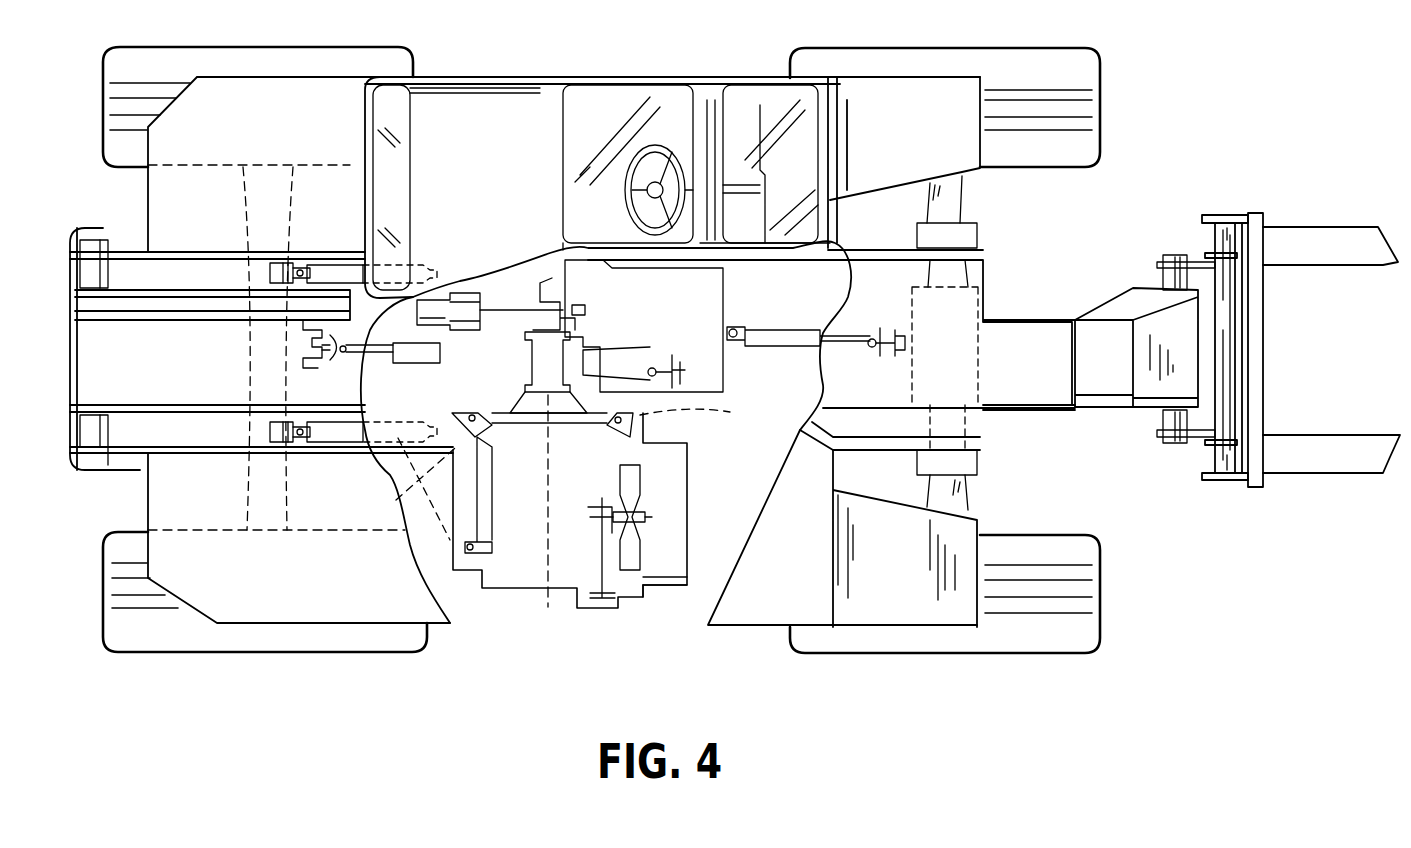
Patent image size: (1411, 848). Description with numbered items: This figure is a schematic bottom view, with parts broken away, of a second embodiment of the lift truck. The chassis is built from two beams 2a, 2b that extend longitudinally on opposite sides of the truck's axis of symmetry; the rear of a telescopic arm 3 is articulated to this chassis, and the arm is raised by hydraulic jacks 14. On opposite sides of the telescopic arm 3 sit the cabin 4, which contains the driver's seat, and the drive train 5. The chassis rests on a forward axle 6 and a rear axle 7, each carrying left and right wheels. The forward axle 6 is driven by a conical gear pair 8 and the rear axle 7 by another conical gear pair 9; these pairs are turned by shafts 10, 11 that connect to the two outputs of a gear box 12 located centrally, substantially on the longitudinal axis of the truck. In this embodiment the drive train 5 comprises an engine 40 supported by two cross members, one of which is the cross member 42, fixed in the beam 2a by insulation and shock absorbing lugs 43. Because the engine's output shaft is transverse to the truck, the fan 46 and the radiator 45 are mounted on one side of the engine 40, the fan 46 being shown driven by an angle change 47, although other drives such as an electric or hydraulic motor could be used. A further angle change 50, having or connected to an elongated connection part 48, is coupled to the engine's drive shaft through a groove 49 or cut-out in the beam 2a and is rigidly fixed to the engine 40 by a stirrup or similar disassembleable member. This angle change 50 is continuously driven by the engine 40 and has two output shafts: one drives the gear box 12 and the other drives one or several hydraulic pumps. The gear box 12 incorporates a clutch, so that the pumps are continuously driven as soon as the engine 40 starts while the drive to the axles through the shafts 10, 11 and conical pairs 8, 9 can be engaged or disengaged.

The beam 2a is at (160, 428).
The beam 2b is at (167, 277).
The telescopic arm 3 is at (1043, 317).
The cabin 4 is at (645, 80).
The drive train 5 is at (537, 605).
The forward axle 6 is at (960, 205).
The rear axle 7 is at (245, 530).
The conical gear pair 8 is at (900, 360).
The conical gear pair 9 is at (315, 366).
The shaft 10 is at (413, 358).
The shaft 11 is at (757, 335).
The gear box 12 is at (722, 295).
The jacks 14 is at (333, 277).
The engine 40 is at (513, 565).
The cross member 42 is at (633, 582).
The insulation and shock absorbing lugs 43 is at (396, 500).
The radiator 45 is at (668, 577).
The fan 46 is at (623, 482).
The angle change 47 is at (592, 517).
The elongated connection part 48 is at (527, 363).
The groove 49 is at (517, 398).
The angle change 50 is at (538, 297).